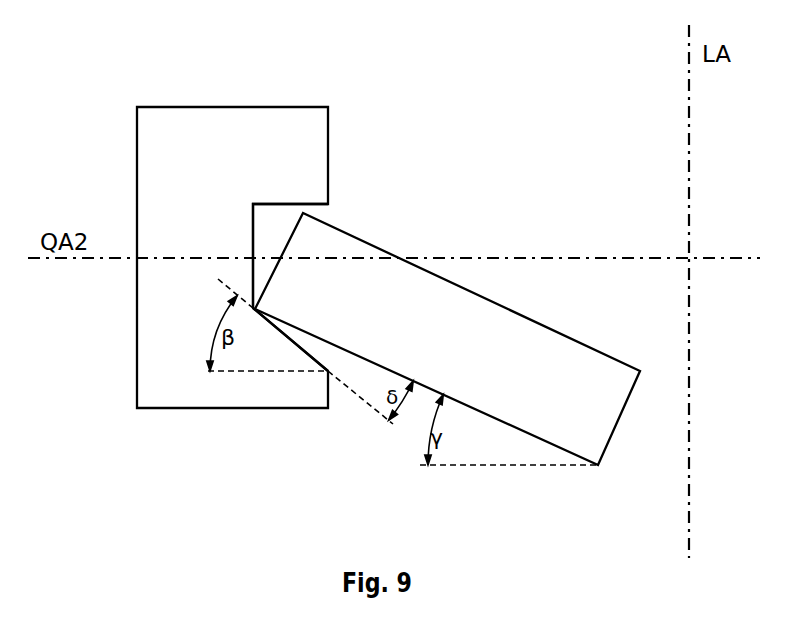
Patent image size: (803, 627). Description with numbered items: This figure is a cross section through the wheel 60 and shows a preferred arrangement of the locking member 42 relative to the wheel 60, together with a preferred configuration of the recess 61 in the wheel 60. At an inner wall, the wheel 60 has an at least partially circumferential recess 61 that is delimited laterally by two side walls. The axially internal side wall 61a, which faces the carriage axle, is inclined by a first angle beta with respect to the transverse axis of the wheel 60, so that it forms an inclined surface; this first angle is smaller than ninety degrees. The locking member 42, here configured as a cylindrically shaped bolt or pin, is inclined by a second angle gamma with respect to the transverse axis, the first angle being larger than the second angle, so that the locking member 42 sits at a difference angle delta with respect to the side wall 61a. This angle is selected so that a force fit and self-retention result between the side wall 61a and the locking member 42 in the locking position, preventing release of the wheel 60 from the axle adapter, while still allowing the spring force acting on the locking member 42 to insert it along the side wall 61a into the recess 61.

The wheel 60 is at (134, 130).
The recess 61 is at (279, 214).
The axially internal side wall 61a is at (284, 350).
The locking member 42 is at (610, 381).